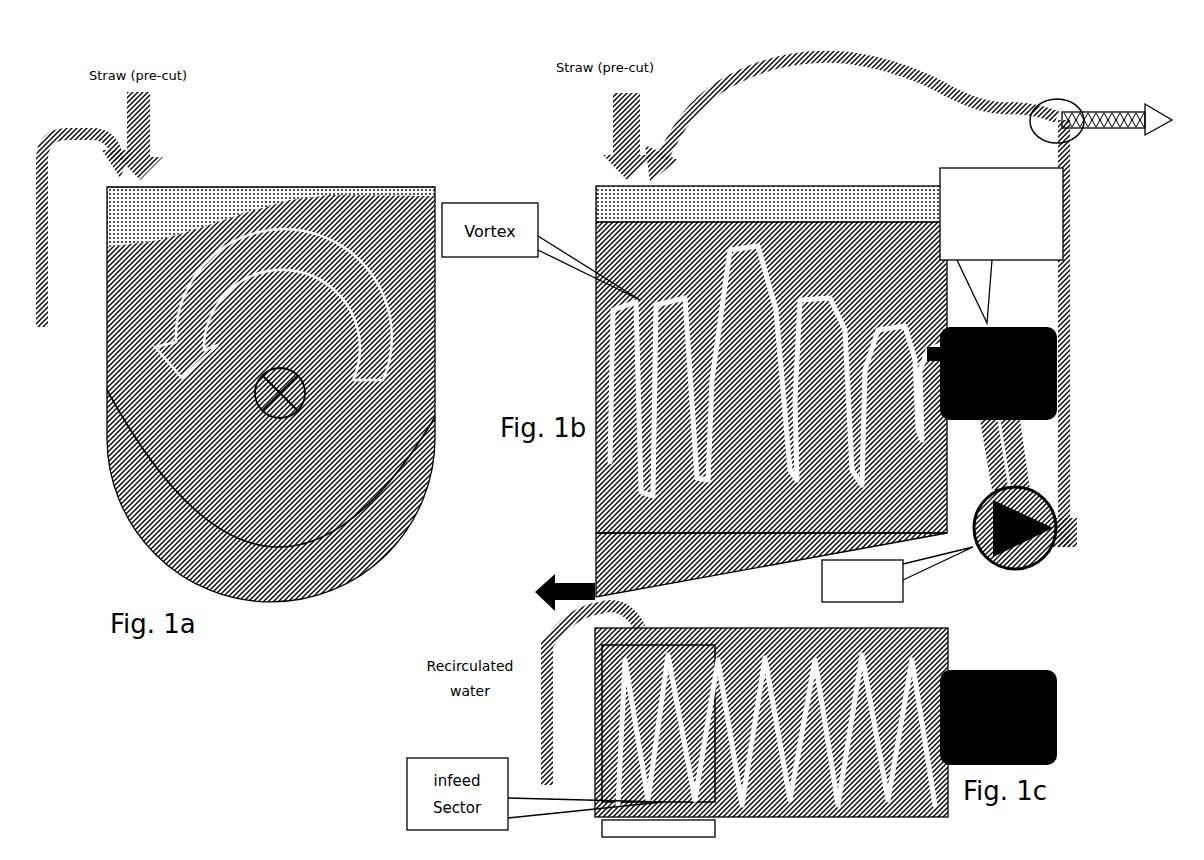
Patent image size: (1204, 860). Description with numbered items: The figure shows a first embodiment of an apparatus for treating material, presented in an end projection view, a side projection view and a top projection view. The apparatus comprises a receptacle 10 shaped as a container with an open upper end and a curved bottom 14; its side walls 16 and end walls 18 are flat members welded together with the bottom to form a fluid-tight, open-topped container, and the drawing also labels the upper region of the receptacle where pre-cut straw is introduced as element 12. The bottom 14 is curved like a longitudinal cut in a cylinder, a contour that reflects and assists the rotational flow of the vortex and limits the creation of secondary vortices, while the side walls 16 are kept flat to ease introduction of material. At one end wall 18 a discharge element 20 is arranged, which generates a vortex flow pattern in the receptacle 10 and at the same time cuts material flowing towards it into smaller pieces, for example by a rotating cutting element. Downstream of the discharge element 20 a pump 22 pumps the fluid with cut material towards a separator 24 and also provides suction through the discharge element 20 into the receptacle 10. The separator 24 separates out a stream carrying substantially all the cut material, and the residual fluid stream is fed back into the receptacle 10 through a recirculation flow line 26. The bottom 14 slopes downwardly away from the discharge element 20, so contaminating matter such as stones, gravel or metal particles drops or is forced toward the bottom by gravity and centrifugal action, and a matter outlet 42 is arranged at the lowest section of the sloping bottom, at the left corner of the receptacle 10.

In FIG. 1A, the receptacle 10 is at (243, 361).
In FIG. 1A, the straw material layer 12 is at (233, 176).
In FIG. 1A, the bottom 14 is at (140, 528).
In FIG. 1A, the side walls 16 is at (104, 302).
In FIG. 1B, the end walls 18 is at (596, 322).
In FIG. 1B, the discharge element 20 is at (1037, 314).
In FIG. 1B, the pump 22 is at (1042, 568).
In FIG. 1B, the separator 24 is at (1088, 97).
In FIG. 1B, the recirculation flow line 26 is at (846, 48).
In FIG. 1B, the matter outlet 42 is at (584, 562).